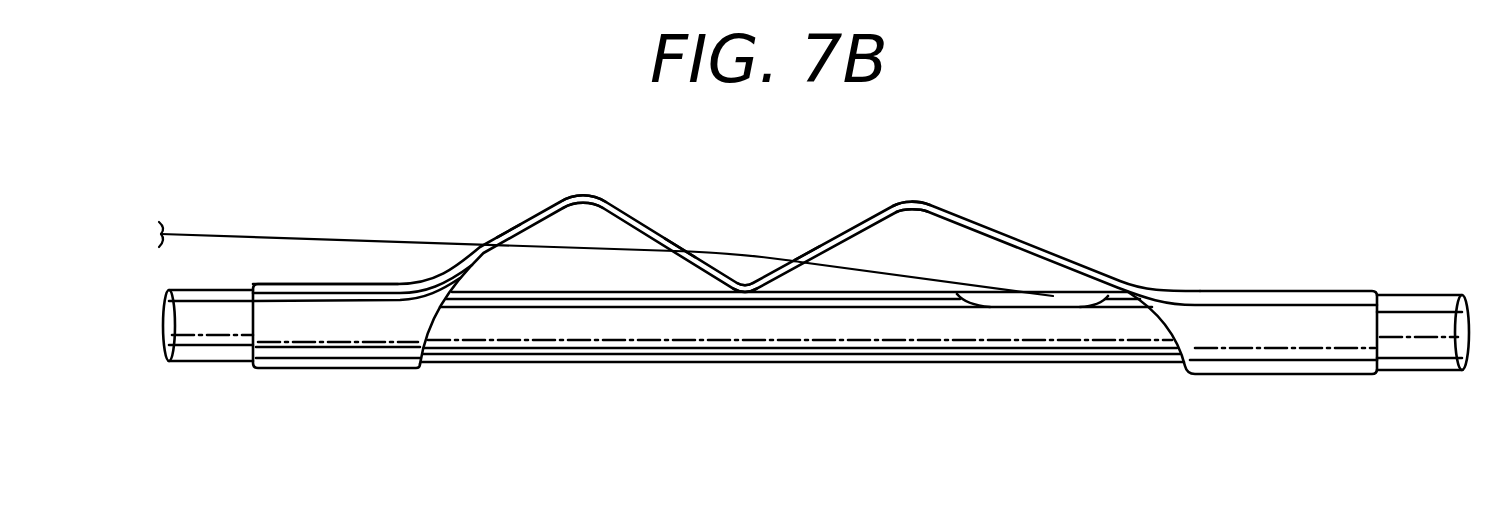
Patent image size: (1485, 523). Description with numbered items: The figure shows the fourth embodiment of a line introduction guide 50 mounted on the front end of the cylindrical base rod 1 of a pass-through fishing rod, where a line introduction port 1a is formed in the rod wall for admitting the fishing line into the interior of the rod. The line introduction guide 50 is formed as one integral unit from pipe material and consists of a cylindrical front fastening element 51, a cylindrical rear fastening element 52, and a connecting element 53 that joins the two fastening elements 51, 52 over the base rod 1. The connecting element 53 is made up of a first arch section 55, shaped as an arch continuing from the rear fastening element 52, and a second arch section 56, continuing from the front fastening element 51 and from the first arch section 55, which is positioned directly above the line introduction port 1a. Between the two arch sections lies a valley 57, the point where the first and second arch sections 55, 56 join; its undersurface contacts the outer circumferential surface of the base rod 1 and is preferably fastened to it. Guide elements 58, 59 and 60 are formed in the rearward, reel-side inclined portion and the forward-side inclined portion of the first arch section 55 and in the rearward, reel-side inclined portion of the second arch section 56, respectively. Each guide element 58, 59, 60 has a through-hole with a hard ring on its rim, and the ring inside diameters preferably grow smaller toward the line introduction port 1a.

The base rod 1 is at (750, 347).
The line introduction port 1a is at (1096, 302).
The line introduction guide 50 is at (1052, 232).
The front fastening element 51 is at (1280, 350).
The rear fastening element 52 is at (348, 348).
The connecting element 53 is at (676, 281).
The first arch section 55 is at (583, 196).
The second arch section 56 is at (918, 201).
The valley 57 is at (748, 284).
The guide element 58 is at (508, 233).
The guide element 59 is at (678, 242).
The guide element 60 is at (806, 252).